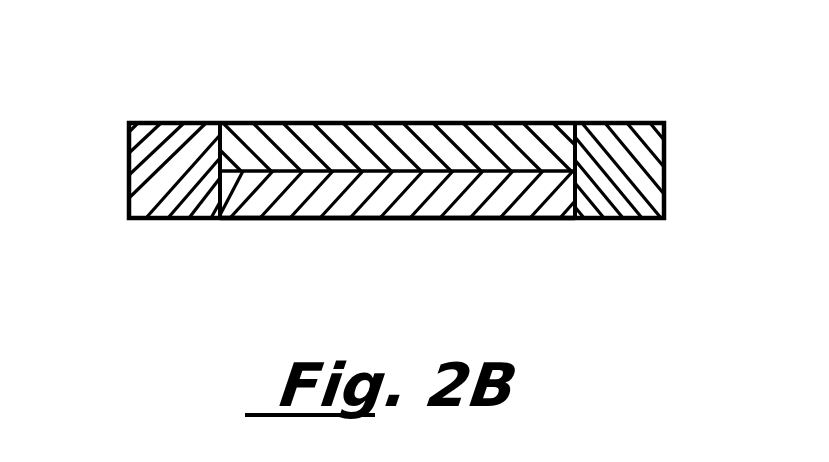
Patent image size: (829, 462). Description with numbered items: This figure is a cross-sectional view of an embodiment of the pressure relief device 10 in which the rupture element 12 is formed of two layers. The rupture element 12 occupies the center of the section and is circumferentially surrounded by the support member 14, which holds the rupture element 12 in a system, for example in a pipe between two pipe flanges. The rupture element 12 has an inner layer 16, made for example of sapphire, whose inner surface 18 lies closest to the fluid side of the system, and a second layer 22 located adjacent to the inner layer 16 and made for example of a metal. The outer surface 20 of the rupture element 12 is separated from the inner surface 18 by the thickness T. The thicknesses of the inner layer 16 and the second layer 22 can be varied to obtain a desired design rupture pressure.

The pressure relief device 10 is at (736, 233).
The rupture element 12 is at (470, 122).
The support member 14 is at (156, 170).
The inner layer 16 is at (462, 196).
The inner surface 18 is at (310, 218).
The outer surface 20 is at (279, 122).
The second layer 22 is at (375, 122).